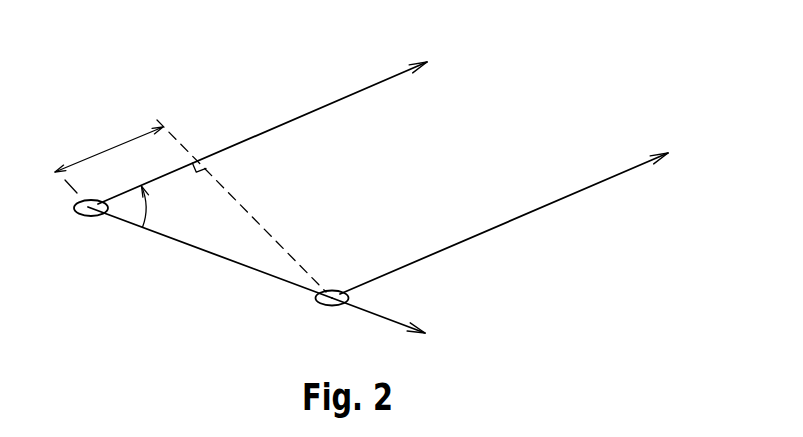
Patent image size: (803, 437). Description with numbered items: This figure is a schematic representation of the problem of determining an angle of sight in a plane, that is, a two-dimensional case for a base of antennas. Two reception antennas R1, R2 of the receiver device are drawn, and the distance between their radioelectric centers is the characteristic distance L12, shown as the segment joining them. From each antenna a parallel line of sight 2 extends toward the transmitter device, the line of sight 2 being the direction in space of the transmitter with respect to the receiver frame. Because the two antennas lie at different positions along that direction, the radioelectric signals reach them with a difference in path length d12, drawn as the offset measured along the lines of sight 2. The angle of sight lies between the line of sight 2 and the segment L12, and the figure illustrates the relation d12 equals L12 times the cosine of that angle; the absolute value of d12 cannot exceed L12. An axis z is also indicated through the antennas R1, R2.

The line of sight 2 is at (352, 93).
The reception antenna R1 is at (74, 207).
The reception antenna R2 is at (317, 303).
The characteristic distance L12 is at (215, 255).
The difference in path length d12 is at (110, 151).
The z axis z is at (386, 322).